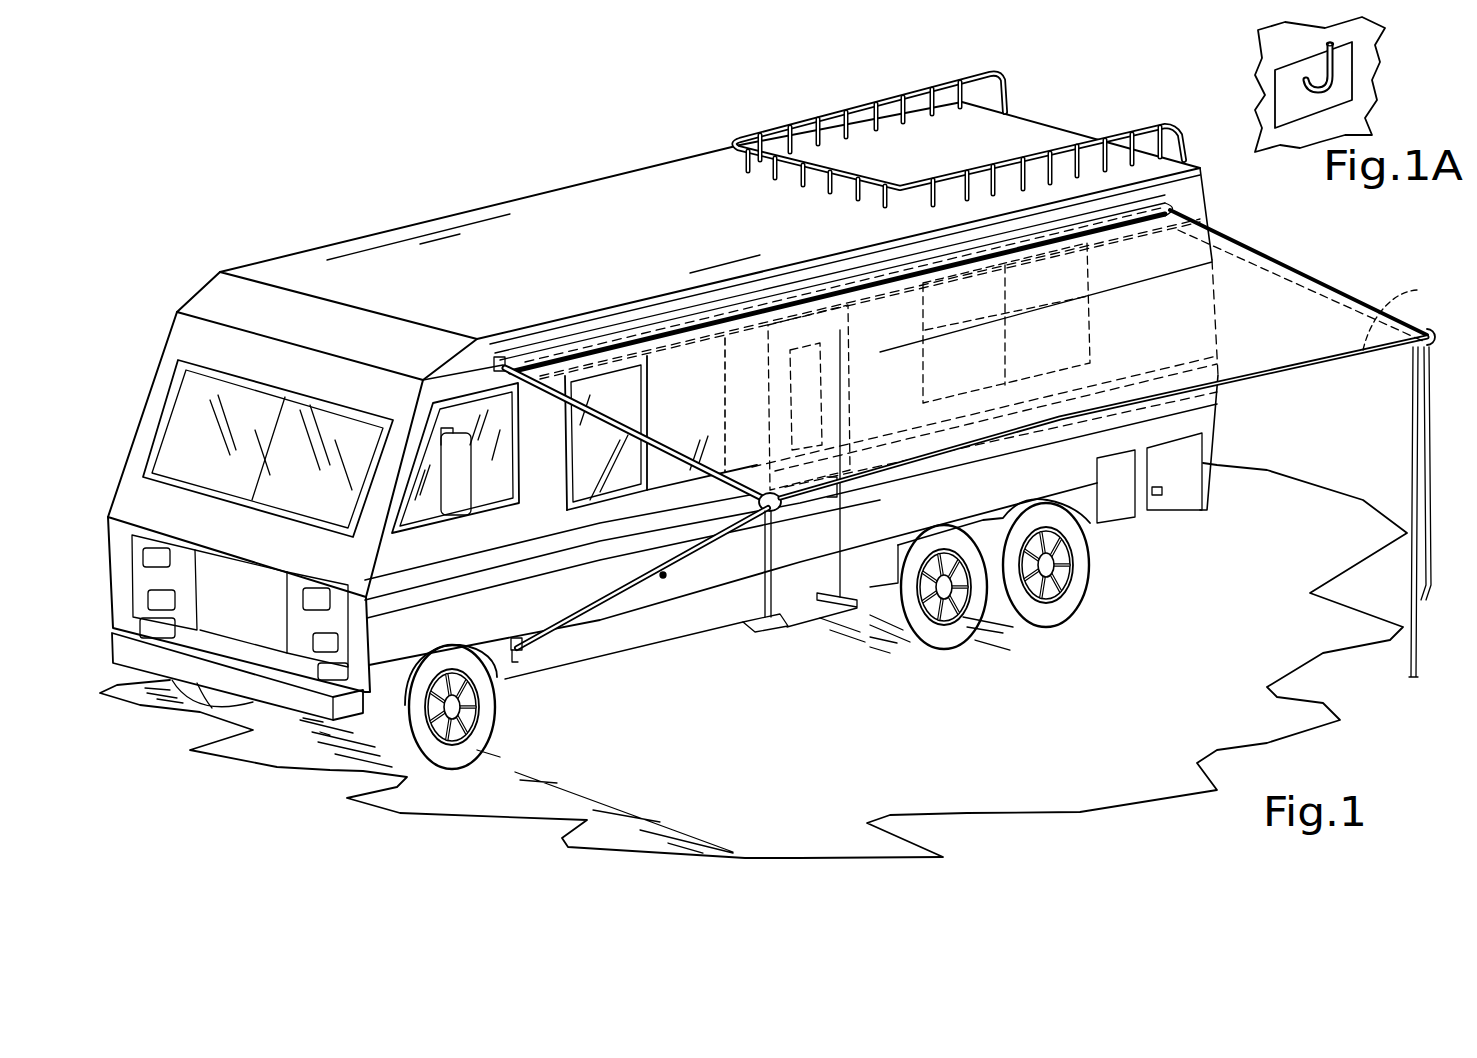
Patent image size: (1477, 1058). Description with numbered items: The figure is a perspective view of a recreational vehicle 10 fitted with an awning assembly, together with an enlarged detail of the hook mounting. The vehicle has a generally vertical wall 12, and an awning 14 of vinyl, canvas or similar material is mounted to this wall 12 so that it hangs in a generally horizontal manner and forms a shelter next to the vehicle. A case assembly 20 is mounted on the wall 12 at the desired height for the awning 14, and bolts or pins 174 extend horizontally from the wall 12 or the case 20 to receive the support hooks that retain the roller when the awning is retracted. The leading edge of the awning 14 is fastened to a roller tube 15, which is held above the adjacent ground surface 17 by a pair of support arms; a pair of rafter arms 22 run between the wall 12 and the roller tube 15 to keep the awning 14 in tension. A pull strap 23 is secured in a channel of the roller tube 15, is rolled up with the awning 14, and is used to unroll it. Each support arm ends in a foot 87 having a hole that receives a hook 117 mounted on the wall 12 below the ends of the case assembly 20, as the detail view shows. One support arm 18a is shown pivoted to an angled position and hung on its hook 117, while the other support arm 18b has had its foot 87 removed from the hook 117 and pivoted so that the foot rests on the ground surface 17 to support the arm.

In FIG. 1, the recreational vehicle 10 is at (615, 245).
In FIG. 1, the wall 12 is at (529, 619).
In FIG. 1A, the wall 12 is at (1273, 48).
In FIG. 1, the awning 14 is at (1265, 290).
In FIG. 1, the roller tube 15 is at (1405, 311).
In FIG. 1, the surface 17 is at (1042, 786).
In FIG. 1, the support arm 18a is at (567, 627).
In FIG. 1, the support arm 18b is at (1417, 557).
In FIG. 1, the case assembly 20 is at (497, 357).
In FIG. 1, the rafter arm 22 is at (667, 447).
In FIG. 1, the pull strap 23 is at (1427, 483).
In FIG. 1, the foot 87 is at (517, 650).
In FIG. 1, the hook 117 is at (508, 648).
In FIG. 1A, the hook 117 is at (1335, 90).
In FIG. 1, the pin 174 is at (477, 378).